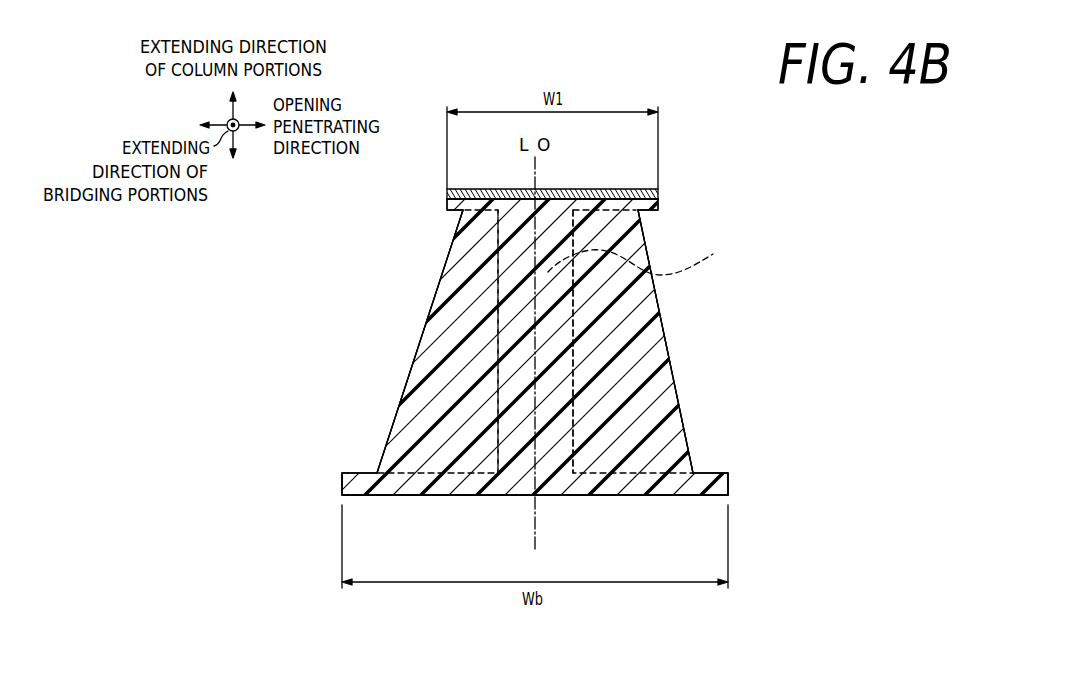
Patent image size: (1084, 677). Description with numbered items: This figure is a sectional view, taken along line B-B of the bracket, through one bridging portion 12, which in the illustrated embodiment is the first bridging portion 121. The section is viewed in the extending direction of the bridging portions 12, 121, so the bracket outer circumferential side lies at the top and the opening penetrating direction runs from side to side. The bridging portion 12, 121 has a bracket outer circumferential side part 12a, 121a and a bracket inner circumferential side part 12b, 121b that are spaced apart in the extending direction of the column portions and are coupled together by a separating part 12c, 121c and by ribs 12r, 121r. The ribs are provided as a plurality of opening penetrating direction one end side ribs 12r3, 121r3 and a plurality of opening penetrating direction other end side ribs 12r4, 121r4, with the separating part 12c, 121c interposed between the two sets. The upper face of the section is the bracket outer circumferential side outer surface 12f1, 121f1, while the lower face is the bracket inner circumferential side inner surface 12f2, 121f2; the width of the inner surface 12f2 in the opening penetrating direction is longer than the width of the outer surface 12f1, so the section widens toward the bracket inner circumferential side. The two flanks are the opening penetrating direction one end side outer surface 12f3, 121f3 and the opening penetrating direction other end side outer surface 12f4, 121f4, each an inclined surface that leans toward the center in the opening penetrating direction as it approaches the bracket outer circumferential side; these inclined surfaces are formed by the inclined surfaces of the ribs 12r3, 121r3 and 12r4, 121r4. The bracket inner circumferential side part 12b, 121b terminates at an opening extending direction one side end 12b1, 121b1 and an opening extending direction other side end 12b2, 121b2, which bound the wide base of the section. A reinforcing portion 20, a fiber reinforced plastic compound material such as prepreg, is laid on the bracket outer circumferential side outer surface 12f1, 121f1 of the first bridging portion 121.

The reinforcing portion 20 is at (505, 189).
The bridging portion 12 is at (609, 335).
The first bridging portion 121 is at (708, 313).
The bracket outer circumferential side part 12a is at (485, 211).
The bracket outer circumferential side part 121a is at (447, 204).
The bracket inner circumferential side part 12b is at (461, 484).
The bracket inner circumferential side part 121b is at (358, 483).
The opening extending direction one side end 12b1 is at (804, 483).
The first side face of lower end portion 121b1 is at (728, 483).
The opening extending direction other side end 12b2 is at (271, 505).
The second side face of lower end portion 121b2 is at (343, 494).
The separating part 12c is at (675, 258).
The separating part 121c is at (675, 258).
The bracket outer circumferential side outer surface 12f1 is at (637, 184).
The bracket outer circumferential side outer surface 121f1 is at (621, 190).
The bracket inner circumferential side inner surface 12f2 is at (535, 523).
The second face (bottom face) of column portion 121f2 is at (638, 495).
The opening penetrating direction one end side outer surface 12f3 is at (743, 341).
The opening penetrating direction one end side outer surface 121f3 is at (671, 368).
The opening penetrating direction other end side outer surface 12f4 is at (353, 341).
The opening penetrating direction other end side outer surface 121f4 is at (434, 298).
The ribs 12r is at (306, 341).
The ribs 121r is at (306, 341).
The opening penetrating direction one end side ribs 12r3 is at (767, 341).
The opening penetrating direction one end side ribs 121r3 is at (623, 418).
The opening penetrating direction other end side ribs 12r4 is at (306, 341).
The opening penetrating direction other end side ribs 121r4 is at (440, 405).